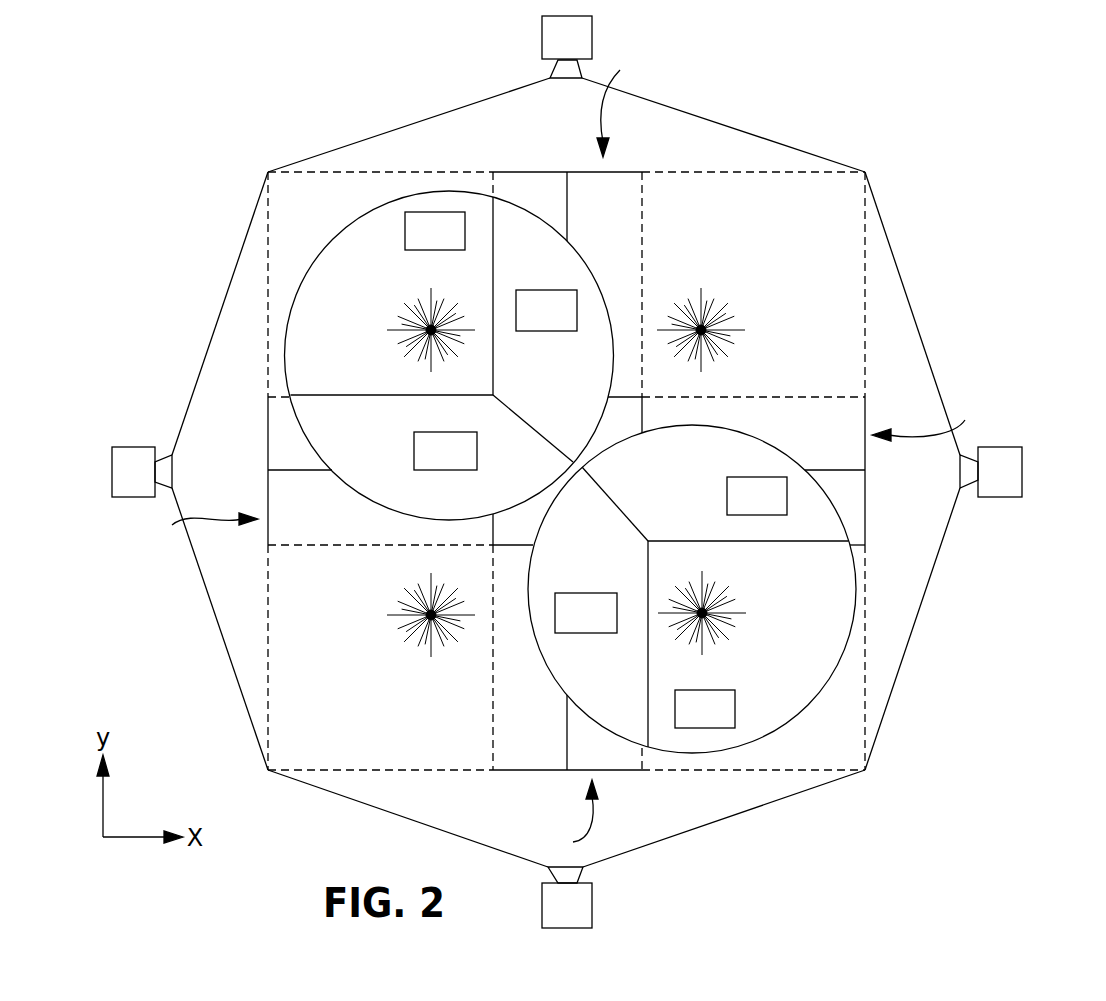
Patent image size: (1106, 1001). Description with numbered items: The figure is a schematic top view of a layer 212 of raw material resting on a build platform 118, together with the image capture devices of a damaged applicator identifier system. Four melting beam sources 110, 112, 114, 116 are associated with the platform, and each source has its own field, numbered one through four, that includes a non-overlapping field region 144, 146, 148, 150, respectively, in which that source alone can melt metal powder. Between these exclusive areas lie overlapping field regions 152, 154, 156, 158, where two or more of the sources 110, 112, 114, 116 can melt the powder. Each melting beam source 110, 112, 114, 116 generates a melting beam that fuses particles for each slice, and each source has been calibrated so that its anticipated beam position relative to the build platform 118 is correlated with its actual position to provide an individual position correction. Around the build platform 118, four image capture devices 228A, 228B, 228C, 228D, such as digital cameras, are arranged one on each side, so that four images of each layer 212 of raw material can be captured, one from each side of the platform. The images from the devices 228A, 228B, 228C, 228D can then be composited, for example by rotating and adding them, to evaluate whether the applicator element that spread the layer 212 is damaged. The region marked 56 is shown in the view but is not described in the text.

The image area 56 is at (657, 752).
The melting beam source 110 is at (420, 320).
The melting beam source 112 is at (710, 325).
The melting beam source 114 is at (708, 620).
The melting beam source 116 is at (420, 608).
The build platform 118 is at (842, 172).
The non-overlapping field region 144 is at (330, 202).
The non-overlapping field region 146 is at (843, 268).
The non-overlapping field region 148 is at (780, 745).
The non-overlapping field region 150 is at (293, 682).
The overlapping field region 152 is at (631, 104).
The overlapping field region 154 is at (934, 416).
The overlapping field region 156 is at (562, 815).
The overlapping field region 158 is at (193, 530).
The layer of raw material 212 is at (390, 740).
The image capture device 228A is at (1000, 480).
The image capture device 228B is at (570, 40).
The image capture device 228C is at (132, 457).
The image capture device 228D is at (570, 903).